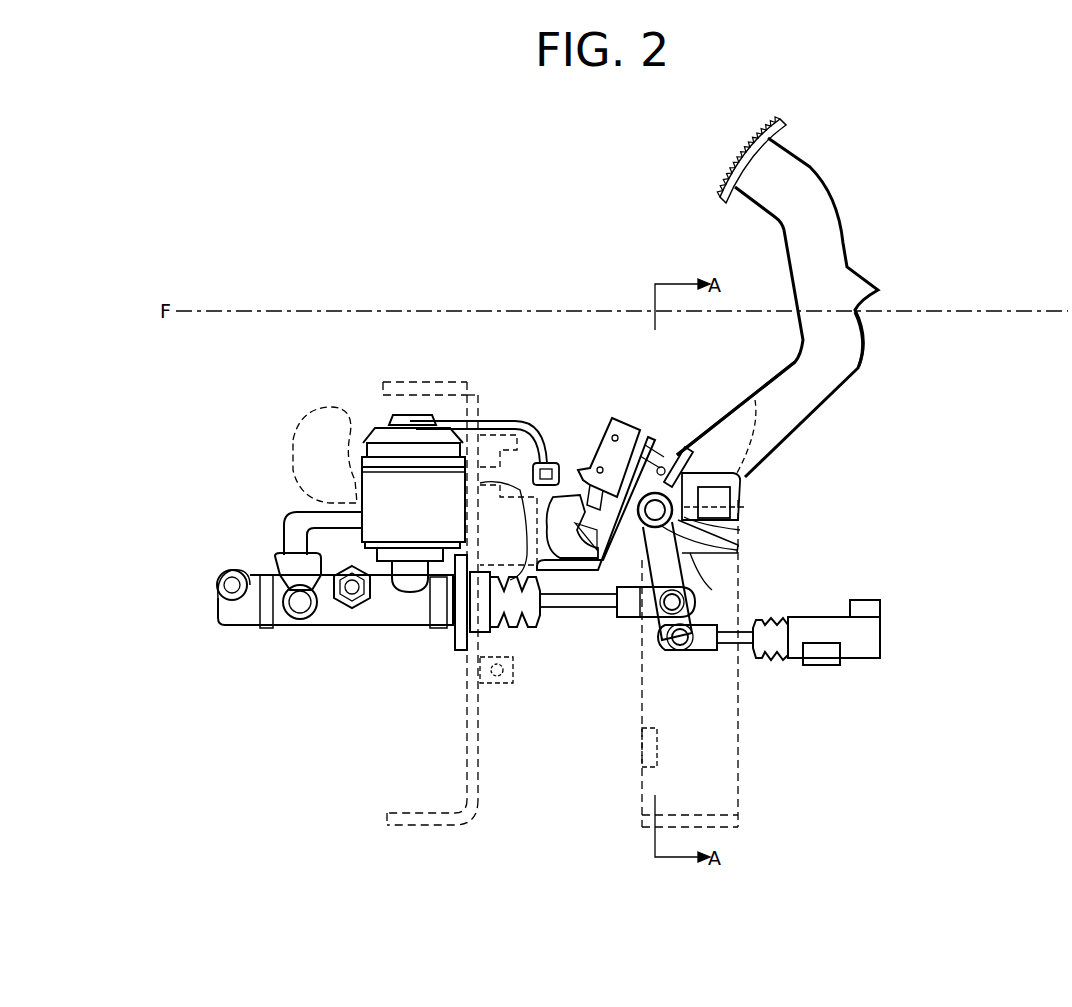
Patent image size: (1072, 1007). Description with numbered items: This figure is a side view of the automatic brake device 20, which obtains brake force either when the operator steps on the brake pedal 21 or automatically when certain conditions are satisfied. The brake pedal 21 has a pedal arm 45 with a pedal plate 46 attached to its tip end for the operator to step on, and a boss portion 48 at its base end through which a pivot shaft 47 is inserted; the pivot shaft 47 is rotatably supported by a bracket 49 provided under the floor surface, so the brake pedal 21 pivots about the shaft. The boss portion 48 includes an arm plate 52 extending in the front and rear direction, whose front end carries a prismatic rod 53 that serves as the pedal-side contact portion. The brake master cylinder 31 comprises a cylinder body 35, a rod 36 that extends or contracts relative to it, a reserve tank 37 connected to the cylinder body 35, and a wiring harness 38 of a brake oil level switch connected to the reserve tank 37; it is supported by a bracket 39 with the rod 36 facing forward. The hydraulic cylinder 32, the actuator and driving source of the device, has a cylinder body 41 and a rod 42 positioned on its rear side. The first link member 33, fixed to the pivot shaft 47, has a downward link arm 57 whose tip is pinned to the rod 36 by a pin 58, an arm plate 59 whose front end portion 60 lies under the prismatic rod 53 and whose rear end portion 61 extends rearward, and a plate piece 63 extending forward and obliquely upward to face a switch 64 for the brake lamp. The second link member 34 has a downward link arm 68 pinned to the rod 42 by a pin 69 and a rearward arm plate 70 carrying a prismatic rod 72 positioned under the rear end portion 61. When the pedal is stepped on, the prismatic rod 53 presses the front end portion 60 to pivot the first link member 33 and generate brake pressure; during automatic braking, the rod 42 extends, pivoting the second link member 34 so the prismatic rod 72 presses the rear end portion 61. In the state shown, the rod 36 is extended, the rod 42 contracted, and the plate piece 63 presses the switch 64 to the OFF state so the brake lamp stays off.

The automatic brake device 20 is at (946, 149).
The brake pedal 21 is at (848, 238).
The brake master cylinder 31 is at (290, 512).
The hydraulic cylinder 32 is at (835, 668).
The first link member 33 is at (755, 400).
The second link member 34 is at (557, 600).
The cylinder body 35 is at (395, 628).
The rod 36 is at (518, 628).
The reserve tank 37 is at (382, 425).
The wiring harness 38 is at (492, 420).
The bracket 39 is at (465, 740).
The cylinder body 41 is at (840, 607).
The rod 42 is at (725, 645).
The pedal arm 45 is at (860, 368).
The pedal plate 46 is at (728, 168).
The pivot shaft 47 is at (655, 508).
The boss portion 48 is at (680, 525).
The bracket 49 is at (745, 718).
The arm plate 52 is at (742, 480).
The prismatic rod 53 is at (742, 503).
The link arm 57 is at (693, 575).
The pin 58 is at (665, 612).
The arm plate 59 is at (700, 560).
The front end portion 60 is at (740, 520).
The rear end portion 61 is at (590, 468).
The plate piece 63 is at (691, 452).
The switch 64 is at (625, 440).
The link arm 68 is at (655, 632).
The pin 69 is at (680, 650).
The arm plate 70 is at (590, 575).
The prismatic rod 72 is at (565, 520).